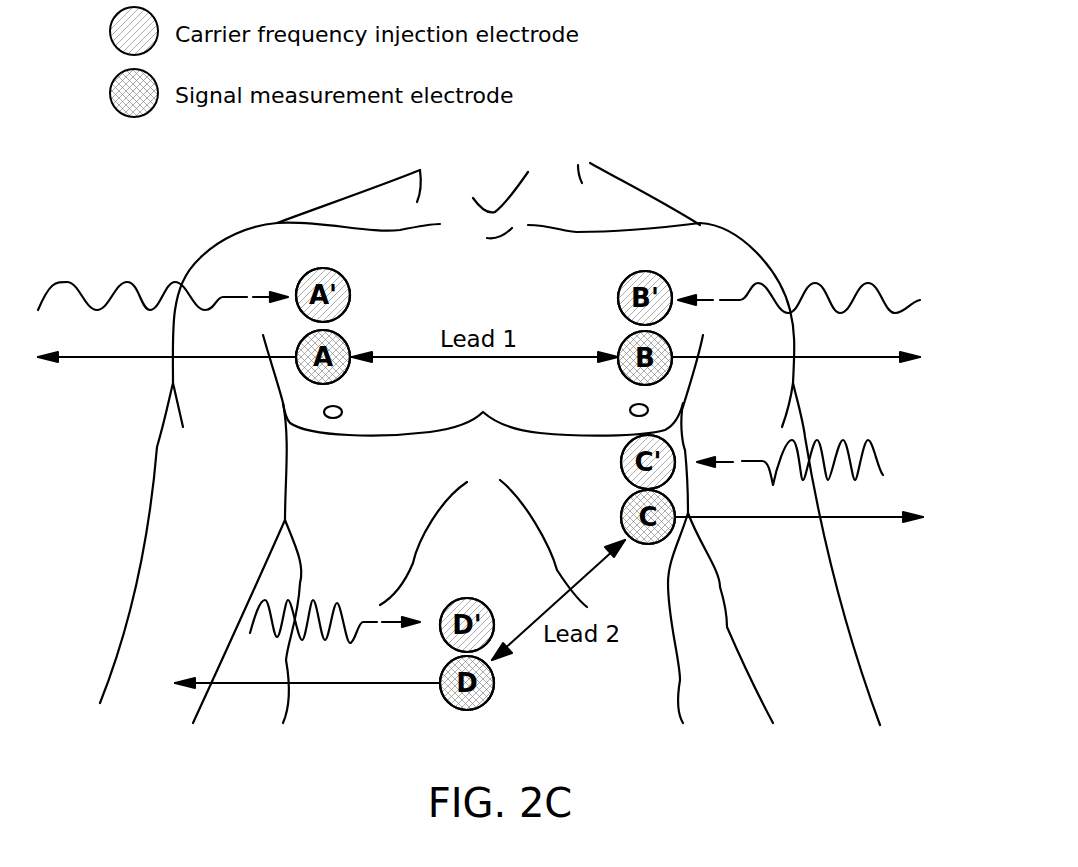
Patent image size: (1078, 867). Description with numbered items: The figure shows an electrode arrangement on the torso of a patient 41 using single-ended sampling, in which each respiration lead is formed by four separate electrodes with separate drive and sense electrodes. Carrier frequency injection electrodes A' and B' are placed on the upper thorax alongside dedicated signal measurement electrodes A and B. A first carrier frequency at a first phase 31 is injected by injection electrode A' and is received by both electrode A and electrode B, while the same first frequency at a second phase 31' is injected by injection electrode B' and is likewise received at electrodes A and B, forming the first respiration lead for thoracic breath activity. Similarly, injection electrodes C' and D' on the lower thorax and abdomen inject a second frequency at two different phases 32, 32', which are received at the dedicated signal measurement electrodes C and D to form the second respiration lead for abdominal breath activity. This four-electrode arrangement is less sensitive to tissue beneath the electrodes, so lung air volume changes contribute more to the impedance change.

The first carrier frequency at a first phase 31 is at (163, 266).
The first carrier frequency at a second phase 31' is at (799, 268).
The patient 41 is at (736, 256).
The second frequency at a first phase 32 is at (822, 459).
The second frequency at a second phase 32' is at (335, 592).